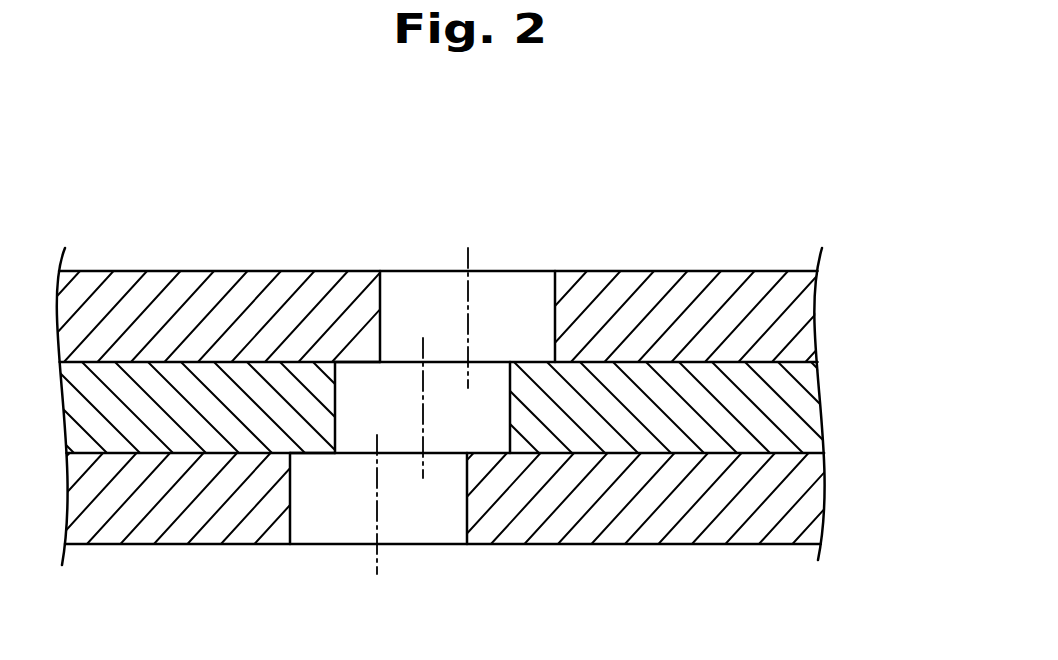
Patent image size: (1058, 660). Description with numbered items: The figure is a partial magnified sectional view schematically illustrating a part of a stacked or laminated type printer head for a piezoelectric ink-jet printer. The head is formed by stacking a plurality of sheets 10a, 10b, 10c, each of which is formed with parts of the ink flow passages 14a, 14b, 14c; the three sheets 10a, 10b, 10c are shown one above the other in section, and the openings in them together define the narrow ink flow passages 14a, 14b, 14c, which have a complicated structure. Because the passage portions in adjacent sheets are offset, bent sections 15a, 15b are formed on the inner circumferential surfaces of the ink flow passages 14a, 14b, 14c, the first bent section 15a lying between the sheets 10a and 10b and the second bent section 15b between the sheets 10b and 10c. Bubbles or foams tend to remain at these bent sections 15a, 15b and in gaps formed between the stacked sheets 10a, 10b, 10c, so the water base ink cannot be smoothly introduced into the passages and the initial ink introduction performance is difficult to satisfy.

The stacked sheet 10a is at (770, 322).
The stacked sheet 10b is at (770, 420).
The stacked sheet 10c is at (770, 512).
The ink flow passage 14a is at (555, 323).
The ink flow passage 14b is at (510, 410).
The ink flow passage 14c is at (466, 500).
The bent section 15a is at (353, 363).
The bent section 15b is at (308, 457).